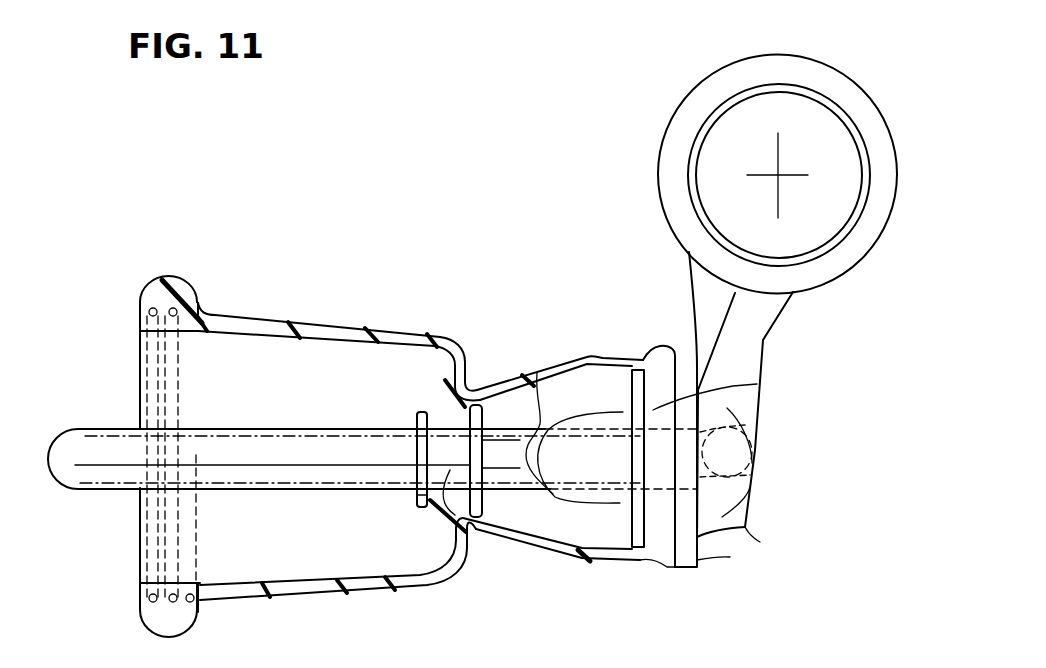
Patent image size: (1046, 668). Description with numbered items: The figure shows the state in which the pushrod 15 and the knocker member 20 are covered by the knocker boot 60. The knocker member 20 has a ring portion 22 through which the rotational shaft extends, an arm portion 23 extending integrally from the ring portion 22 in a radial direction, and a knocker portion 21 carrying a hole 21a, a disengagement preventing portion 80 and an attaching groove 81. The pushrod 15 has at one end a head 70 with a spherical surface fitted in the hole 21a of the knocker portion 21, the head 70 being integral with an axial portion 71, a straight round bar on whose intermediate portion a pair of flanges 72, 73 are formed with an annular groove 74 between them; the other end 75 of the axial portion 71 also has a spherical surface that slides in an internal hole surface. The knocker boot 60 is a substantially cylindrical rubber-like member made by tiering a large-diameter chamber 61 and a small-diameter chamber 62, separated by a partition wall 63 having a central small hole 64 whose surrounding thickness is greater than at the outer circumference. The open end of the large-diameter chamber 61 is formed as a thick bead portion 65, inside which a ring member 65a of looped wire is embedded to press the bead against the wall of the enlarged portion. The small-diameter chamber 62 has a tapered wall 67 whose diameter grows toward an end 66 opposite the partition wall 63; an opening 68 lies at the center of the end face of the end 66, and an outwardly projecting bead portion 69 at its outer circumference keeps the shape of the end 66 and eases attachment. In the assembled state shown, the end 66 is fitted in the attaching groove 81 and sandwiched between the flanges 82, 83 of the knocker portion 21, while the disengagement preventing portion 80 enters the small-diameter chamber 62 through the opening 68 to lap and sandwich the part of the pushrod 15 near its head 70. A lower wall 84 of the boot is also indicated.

The pushrod 15 is at (268, 470).
The knocker member 20 is at (706, 61).
The knocker portion 21 is at (758, 495).
The hole 21a is at (752, 427).
The ring portion 22 is at (686, 130).
The arm portion 23 is at (758, 340).
The knocker boot 60 is at (333, 318).
The large-diameter chamber 61 is at (267, 323).
The small-diameter chamber 62 is at (608, 357).
The partition wall 63 is at (446, 417).
The small hole 64 is at (416, 432).
The bead portion 65 is at (176, 278).
The ring member 65a is at (140, 303).
The end 66 is at (769, 543).
The tapered wall 67 is at (552, 378).
The opening 68 is at (757, 384).
The bead portion 69 is at (665, 348).
The head 70 is at (750, 477).
The axial portion 71 is at (537, 373).
The flange 72 is at (417, 496).
The flange 73 is at (477, 403).
The annular groove 74 is at (455, 475).
The other end 75 is at (52, 455).
The disengagement preventing portion 80 is at (565, 460).
The attaching groove 81 is at (667, 567).
The flange 82 is at (698, 560).
The flange 83 is at (618, 540).
The lower wall 84 is at (515, 477).